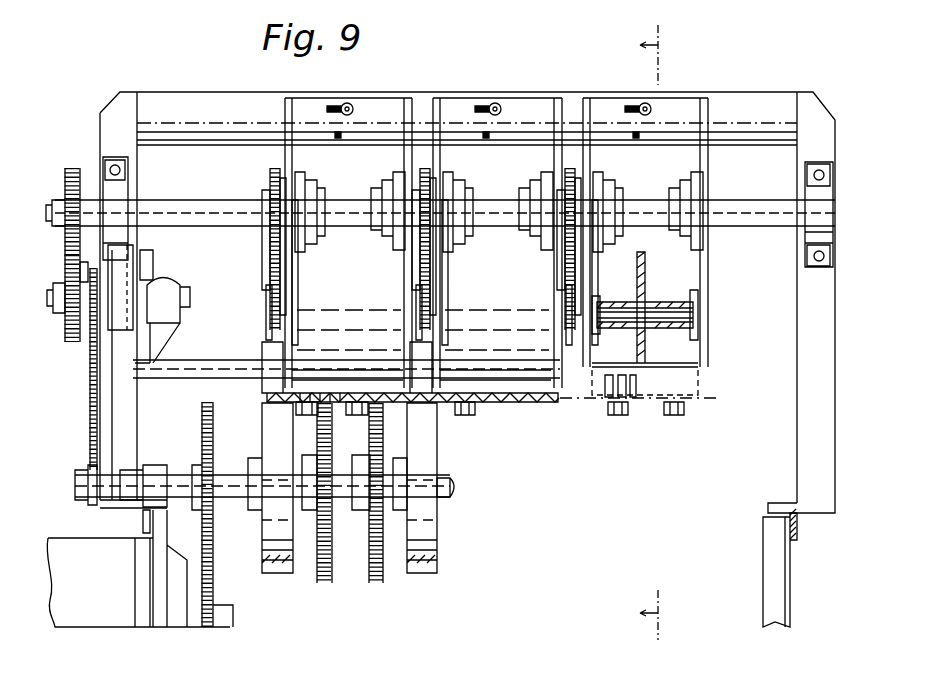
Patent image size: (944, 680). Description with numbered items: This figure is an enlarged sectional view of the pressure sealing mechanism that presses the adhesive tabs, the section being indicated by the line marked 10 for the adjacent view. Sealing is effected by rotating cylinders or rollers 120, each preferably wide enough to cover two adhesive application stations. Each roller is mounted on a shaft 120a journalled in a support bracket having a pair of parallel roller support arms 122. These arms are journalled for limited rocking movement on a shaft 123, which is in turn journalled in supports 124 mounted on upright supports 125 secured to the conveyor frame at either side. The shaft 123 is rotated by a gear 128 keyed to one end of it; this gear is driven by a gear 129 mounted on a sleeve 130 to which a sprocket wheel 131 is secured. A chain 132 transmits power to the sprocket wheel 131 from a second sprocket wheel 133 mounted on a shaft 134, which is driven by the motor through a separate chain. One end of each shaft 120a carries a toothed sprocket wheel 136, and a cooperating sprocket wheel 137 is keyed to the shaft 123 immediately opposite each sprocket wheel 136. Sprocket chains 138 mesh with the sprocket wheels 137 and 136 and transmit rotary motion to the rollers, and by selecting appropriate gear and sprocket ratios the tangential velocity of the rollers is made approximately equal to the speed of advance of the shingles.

The section line for FIG. 10 is at (660, 332).
The rollers 120 is at (262, 347).
The roller shafts 120a is at (663, 329).
The roller support arms 122 is at (285, 143).
The shaft 123 is at (177, 205).
The supports 124 is at (110, 195).
The upright supports 125 is at (115, 410).
The gear 128 is at (70, 181).
The gear 129 is at (68, 273).
The sleeve 130 is at (80, 342).
The sprocket wheel 131 is at (56, 300).
The chain 132 is at (90, 380).
The second sprocket wheel 133 is at (90, 462).
The shaft 134 is at (75, 485).
The toothed sprocket wheel 136 is at (270, 290).
The cooperating sprocket wheel 137 is at (272, 172).
The sprocket chains 138 is at (268, 270).